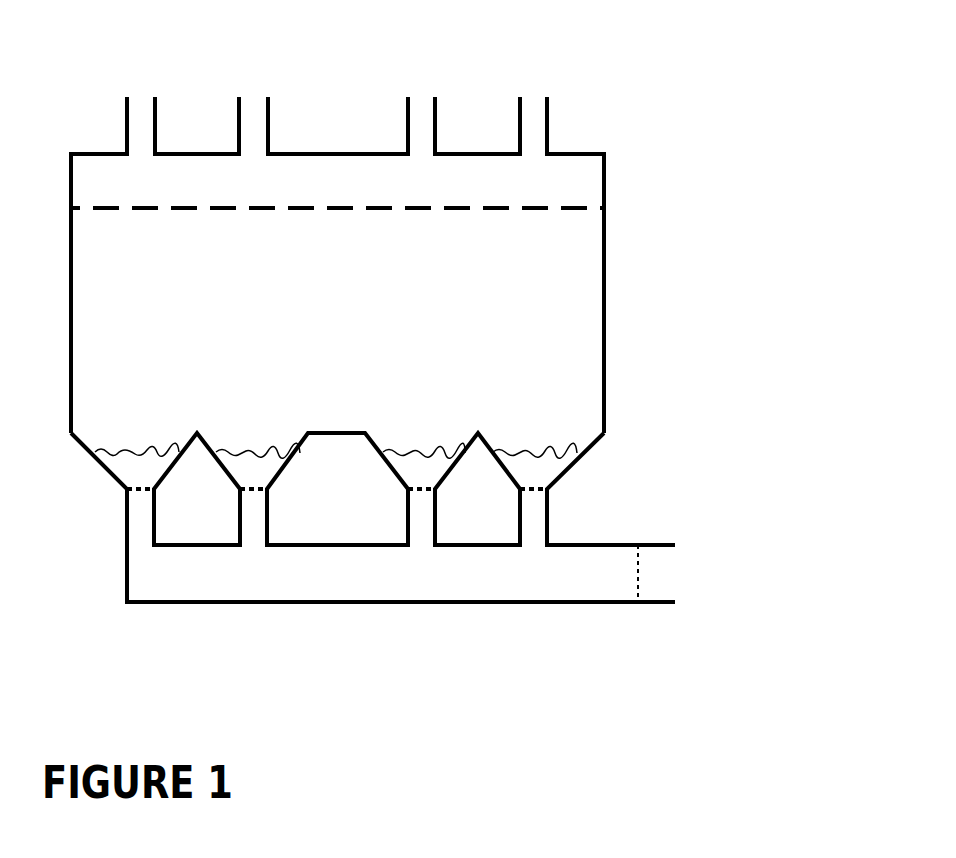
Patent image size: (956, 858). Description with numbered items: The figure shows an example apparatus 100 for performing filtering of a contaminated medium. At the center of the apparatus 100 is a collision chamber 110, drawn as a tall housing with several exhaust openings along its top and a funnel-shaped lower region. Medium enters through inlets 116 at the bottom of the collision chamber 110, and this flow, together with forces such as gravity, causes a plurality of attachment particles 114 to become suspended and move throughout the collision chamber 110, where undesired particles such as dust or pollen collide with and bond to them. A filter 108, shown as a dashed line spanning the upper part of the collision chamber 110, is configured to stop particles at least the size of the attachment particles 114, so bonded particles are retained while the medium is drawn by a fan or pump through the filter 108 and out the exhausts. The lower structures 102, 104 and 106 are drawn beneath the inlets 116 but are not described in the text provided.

The apparatus 100 is at (112, 42).
The plate 102 is at (587, 560).
The base 104 is at (627, 583).
The opening 106 is at (427, 493).
The filter 108 is at (583, 200).
The collision chamber 110 is at (583, 385).
The attachment particles 114 is at (222, 450).
The inlets 116 is at (113, 489).